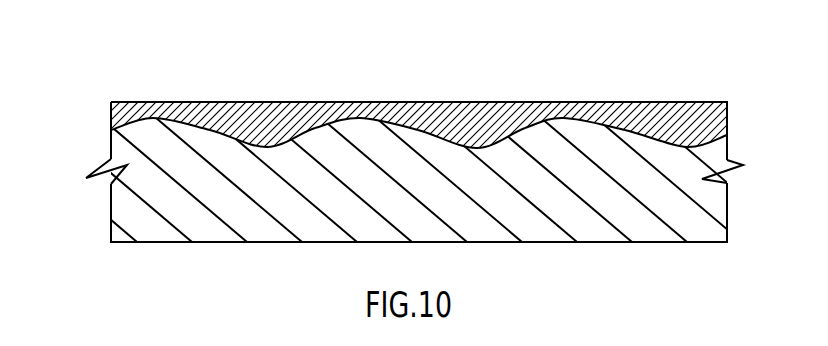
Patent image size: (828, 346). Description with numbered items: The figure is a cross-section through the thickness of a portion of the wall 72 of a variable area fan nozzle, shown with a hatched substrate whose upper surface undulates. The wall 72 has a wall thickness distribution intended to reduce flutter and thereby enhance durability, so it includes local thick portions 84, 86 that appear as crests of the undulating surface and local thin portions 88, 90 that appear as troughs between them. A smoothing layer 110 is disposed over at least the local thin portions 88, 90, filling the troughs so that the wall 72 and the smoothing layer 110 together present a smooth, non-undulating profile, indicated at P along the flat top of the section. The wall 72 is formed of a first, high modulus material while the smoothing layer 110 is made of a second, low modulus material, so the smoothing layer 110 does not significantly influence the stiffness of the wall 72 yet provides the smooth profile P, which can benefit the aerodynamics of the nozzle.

The smooth, non-undulating profile P is at (178, 89).
The wall 72 is at (97, 231).
The local thick portion 84 is at (575, 118).
The local thick portion 86 is at (360, 118).
The local thin portion 88 is at (272, 146).
The local thin portion 90 is at (468, 148).
The smoothing layer 110 is at (483, 102).